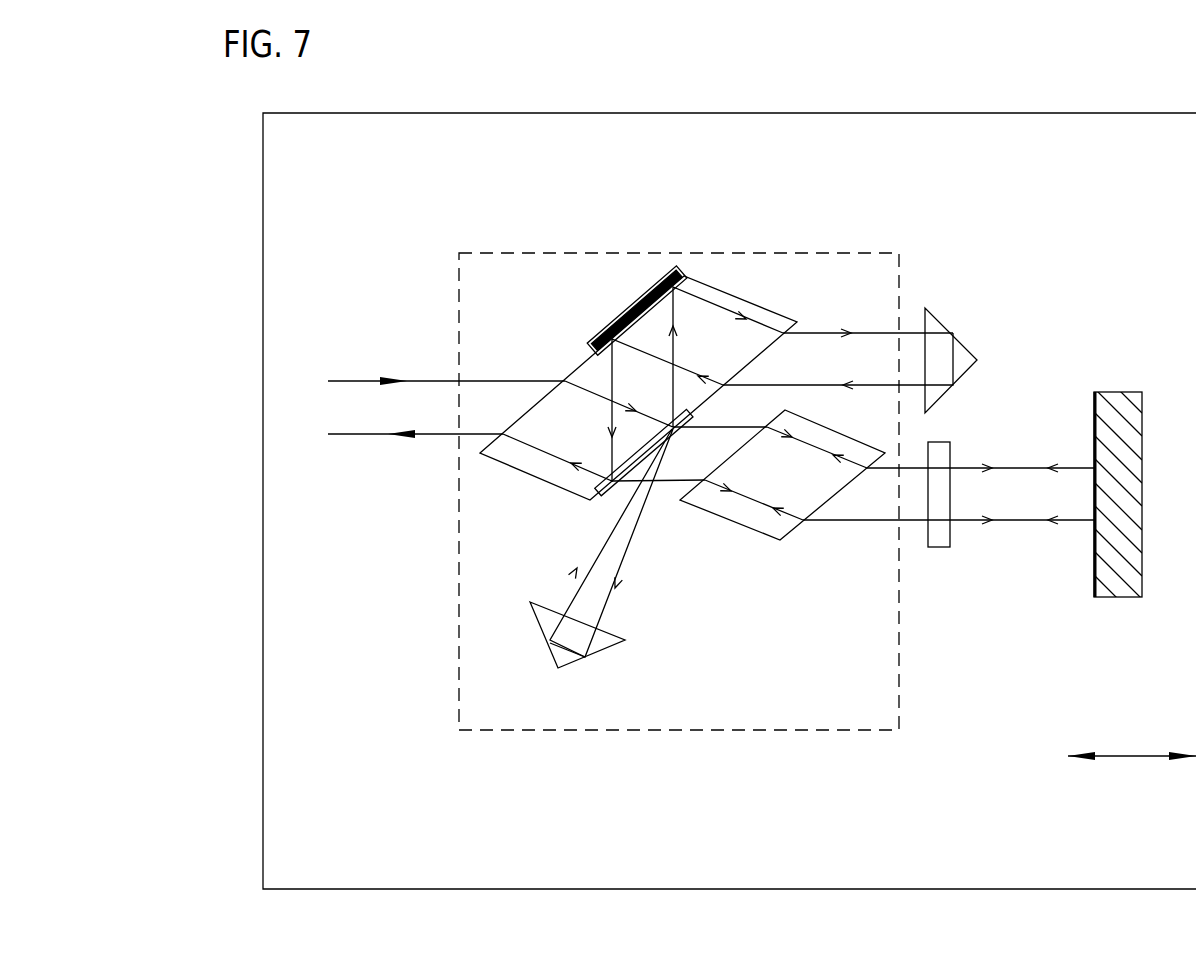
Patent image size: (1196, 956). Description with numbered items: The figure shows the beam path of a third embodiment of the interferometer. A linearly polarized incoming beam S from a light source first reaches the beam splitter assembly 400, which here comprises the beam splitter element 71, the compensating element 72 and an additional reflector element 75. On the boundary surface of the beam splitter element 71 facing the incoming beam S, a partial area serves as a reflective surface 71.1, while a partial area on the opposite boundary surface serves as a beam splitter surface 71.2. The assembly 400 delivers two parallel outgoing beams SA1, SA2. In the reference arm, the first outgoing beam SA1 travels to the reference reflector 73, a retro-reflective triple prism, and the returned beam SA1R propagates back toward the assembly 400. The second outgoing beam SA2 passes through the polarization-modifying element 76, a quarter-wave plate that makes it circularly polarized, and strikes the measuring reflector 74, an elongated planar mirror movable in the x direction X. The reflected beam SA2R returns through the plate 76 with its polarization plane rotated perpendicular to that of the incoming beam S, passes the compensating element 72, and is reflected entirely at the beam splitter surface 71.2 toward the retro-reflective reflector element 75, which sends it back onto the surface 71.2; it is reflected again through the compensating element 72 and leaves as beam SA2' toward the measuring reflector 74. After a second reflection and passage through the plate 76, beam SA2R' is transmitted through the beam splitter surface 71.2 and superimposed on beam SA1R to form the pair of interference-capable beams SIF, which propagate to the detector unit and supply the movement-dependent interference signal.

The beam splitter element 71 is at (543, 335).
The reflective surface 71.1 is at (622, 320).
The beam splitter surface 71.2 is at (647, 458).
The compensating element 72 is at (823, 552).
The reference reflector 73 is at (942, 328).
The measuring reflector 74 is at (1113, 392).
The reflector element 75 is at (540, 632).
The polarization-modifying element 76 is at (938, 535).
The beam splitter assembly 400 is at (702, 732).
The incoming beam S is at (357, 378).
The interference-capable beams SIF is at (362, 440).
The first outgoing beam SA1 is at (830, 333).
The reflected first beam SA1R is at (810, 387).
The second outgoing beam SA2 is at (980, 428).
The reflected second beam SA2R is at (1055, 410).
The second-pass outgoing beam SA2' is at (948, 560).
The second interference-capable beam SA2R' is at (1090, 581).
The x direction X is at (1132, 778).